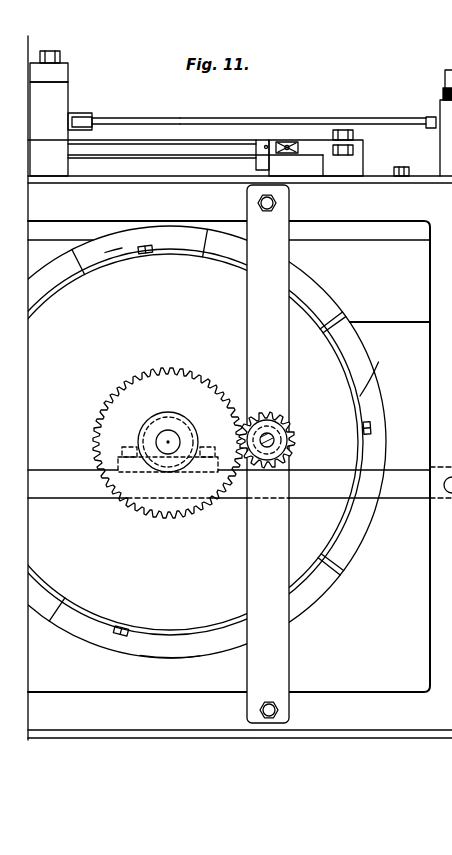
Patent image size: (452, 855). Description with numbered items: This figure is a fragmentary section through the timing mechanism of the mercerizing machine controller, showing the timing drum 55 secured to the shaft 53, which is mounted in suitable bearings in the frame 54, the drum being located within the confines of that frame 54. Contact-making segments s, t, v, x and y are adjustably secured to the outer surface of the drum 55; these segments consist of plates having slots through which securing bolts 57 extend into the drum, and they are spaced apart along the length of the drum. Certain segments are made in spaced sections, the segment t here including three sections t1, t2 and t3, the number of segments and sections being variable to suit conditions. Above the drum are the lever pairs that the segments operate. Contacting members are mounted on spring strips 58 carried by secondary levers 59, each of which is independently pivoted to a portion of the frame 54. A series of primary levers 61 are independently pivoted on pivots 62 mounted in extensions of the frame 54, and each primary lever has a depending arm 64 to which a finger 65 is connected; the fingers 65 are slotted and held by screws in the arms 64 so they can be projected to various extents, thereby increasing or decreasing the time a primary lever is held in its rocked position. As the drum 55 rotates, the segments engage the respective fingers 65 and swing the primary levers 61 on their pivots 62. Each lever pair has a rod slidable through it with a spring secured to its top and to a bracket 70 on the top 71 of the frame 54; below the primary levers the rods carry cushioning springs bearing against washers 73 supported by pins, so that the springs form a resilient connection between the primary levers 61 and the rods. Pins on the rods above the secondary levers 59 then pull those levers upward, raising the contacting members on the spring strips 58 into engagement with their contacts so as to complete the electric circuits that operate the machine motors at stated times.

The shaft 53 is at (165, 438).
The frame 54 is at (286, 644).
The timing drum 55 is at (112, 628).
The securing bolts 57 is at (141, 253).
The spring strips 58 is at (218, 109).
The secondary levers 59 is at (154, 118).
The primary levers 61 is at (236, 140).
The pivots 62 is at (284, 144).
The depending arms 64 is at (263, 162).
The fingers 65 is at (323, 141).
The bracket 70 is at (42, 50).
The top of the frame 71 is at (66, 73).
The washers 73 is at (441, 81).
The contact-making segment t is at (44, 288).
The section of segment t t1 is at (60, 280).
The section of segment t t2 is at (43, 588).
The section of segment t t3 is at (372, 373).
The contact-making segment s is at (325, 301).
The contact-making segment v is at (112, 255).
The contact-making segment x is at (353, 553).
The contact-making segment y is at (157, 654).